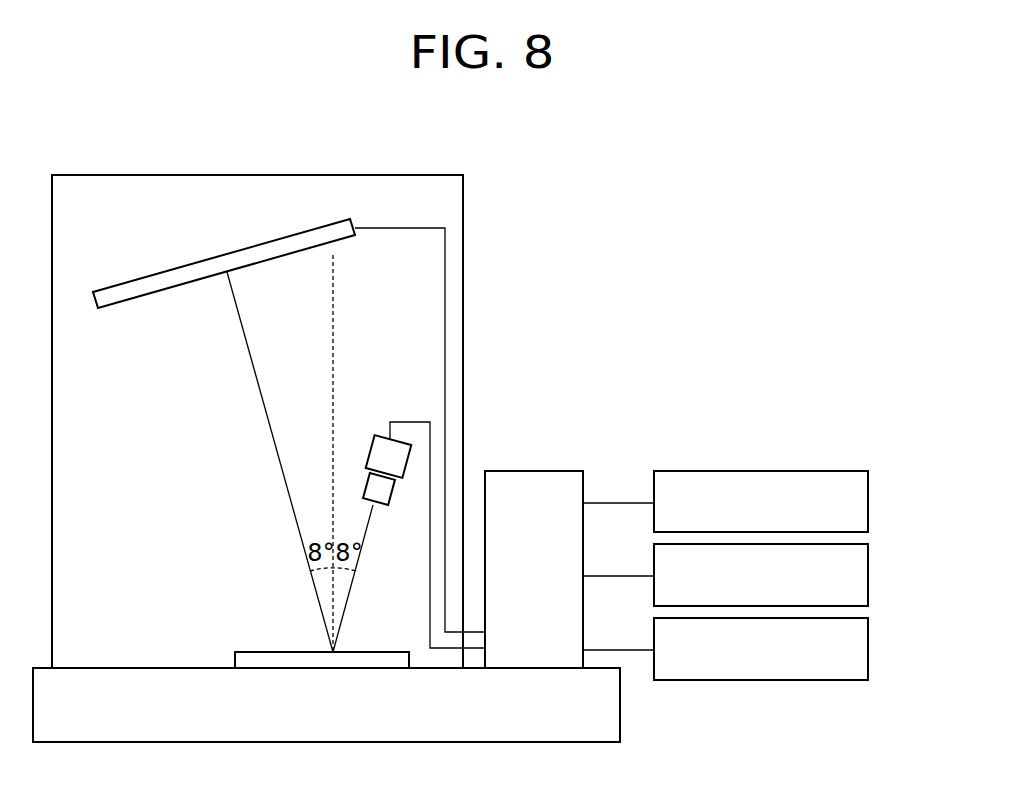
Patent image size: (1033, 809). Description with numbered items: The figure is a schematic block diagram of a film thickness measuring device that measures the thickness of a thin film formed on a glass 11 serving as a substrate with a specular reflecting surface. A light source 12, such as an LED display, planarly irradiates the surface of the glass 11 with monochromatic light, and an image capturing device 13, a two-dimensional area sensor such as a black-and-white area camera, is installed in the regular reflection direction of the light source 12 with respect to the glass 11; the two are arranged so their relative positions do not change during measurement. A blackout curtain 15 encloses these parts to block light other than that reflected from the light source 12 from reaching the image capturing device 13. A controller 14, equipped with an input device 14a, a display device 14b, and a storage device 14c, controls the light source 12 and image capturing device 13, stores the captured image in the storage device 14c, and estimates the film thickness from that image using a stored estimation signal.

The glass 11 is at (268, 650).
The light source 12 is at (157, 272).
The image capturing device 13 is at (388, 432).
The controller 14 is at (533, 470).
The input device 14a is at (868, 503).
The display device 14b is at (868, 576).
The storage device 14c is at (868, 650).
The blackout curtain 15 is at (463, 280).